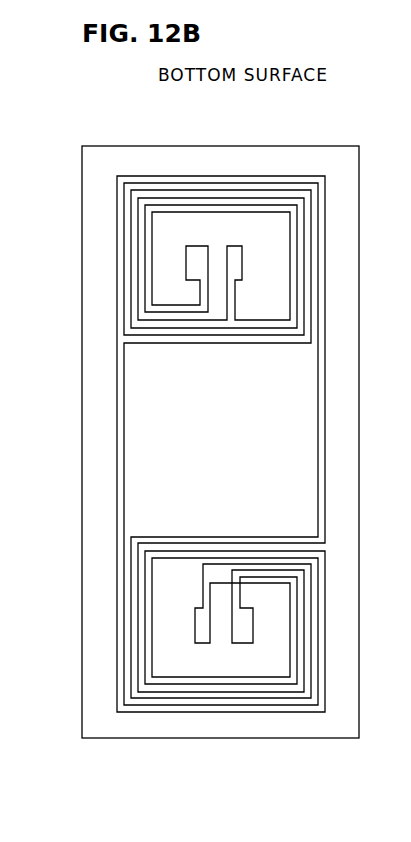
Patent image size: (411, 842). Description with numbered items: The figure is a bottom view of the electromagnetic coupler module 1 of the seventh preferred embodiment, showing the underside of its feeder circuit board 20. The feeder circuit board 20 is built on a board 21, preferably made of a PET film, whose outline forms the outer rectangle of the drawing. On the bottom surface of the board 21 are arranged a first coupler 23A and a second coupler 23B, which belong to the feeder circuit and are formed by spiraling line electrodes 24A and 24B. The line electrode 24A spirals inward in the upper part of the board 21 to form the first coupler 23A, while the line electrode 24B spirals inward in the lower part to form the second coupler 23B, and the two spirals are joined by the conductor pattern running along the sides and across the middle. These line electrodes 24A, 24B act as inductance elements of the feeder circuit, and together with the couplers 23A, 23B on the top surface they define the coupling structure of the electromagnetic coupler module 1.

The electromagnetic coupler module 1 is at (368, 118).
The feeder circuit board 20 is at (72, 298).
The board 21 is at (82, 401).
The first coupler 23A is at (241, 192).
The line electrode 24A is at (117, 238).
The second coupler 23B is at (187, 694).
The line electrode 24B is at (233, 713).